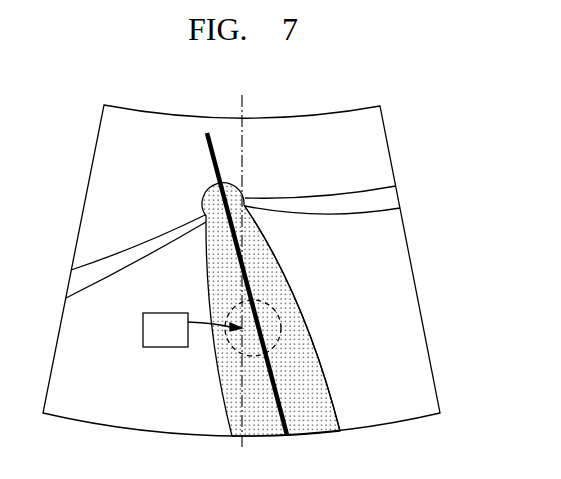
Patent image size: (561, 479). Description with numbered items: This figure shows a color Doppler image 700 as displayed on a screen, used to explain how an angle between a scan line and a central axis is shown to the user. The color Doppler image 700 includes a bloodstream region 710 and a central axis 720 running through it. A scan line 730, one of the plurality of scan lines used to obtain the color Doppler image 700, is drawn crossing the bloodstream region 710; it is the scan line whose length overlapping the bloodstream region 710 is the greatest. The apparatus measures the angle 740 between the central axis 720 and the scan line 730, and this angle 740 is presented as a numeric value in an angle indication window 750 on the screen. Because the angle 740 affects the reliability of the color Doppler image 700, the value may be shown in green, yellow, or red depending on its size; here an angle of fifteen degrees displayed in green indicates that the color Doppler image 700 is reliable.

The color Doppler image 700 is at (150, 155).
The bloodstream region 710 is at (333, 389).
The central axis 720 is at (273, 368).
The scan line 730 is at (243, 160).
The angle 740 is at (257, 322).
The angle indication window 750 is at (167, 347).